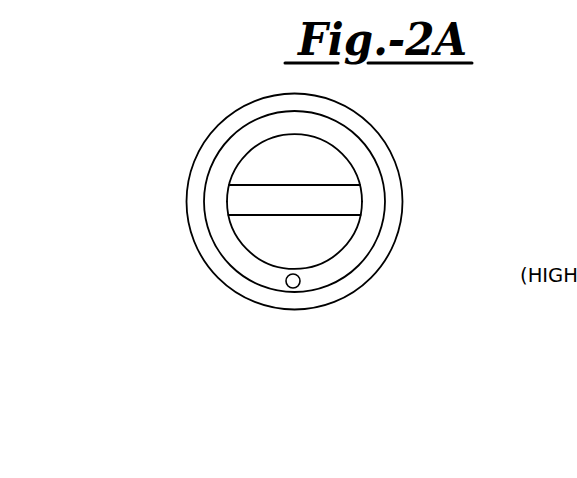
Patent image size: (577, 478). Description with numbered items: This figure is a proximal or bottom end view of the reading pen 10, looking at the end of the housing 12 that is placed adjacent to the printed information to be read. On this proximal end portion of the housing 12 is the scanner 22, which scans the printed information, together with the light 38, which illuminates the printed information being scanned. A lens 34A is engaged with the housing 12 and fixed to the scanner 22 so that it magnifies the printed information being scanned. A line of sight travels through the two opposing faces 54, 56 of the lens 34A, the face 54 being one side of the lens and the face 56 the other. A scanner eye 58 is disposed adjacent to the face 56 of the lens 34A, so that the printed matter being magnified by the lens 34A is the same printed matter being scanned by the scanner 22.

The reading pen 10 is at (386, 292).
The housing 12 is at (327, 304).
The scanner 22 is at (368, 236).
The lens 34A is at (238, 218).
The light 38 is at (402, 207).
The face 54 is at (312, 147).
The face 56 is at (258, 247).
The scanner eye 58 is at (289, 287).